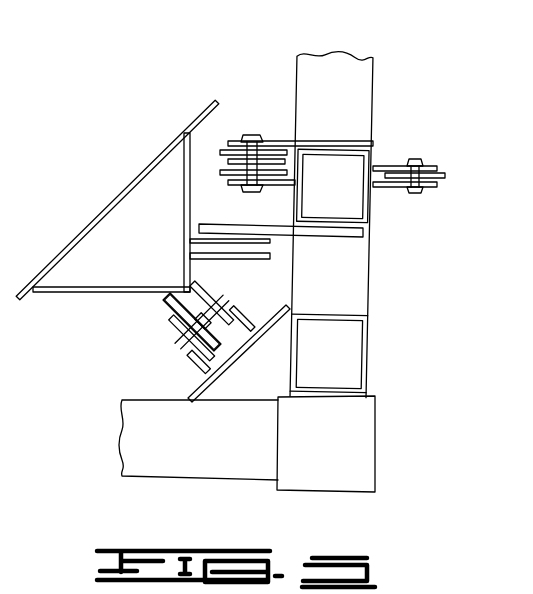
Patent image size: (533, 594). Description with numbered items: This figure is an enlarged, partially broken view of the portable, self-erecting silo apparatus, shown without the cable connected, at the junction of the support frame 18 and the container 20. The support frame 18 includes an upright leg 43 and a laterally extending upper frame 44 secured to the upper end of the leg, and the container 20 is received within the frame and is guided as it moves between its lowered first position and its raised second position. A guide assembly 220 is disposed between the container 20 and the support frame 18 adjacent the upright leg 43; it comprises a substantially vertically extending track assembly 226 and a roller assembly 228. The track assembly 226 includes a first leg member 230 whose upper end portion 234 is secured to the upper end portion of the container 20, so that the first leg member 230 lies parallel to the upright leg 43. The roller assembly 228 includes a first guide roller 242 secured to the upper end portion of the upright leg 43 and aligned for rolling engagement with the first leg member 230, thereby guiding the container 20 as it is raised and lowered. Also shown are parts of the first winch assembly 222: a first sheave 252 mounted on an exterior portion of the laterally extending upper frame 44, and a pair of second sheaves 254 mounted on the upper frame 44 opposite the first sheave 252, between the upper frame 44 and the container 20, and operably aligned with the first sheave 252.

The support frame 18 is at (376, 271).
The container 20 is at (125, 190).
The upright leg 43 is at (348, 431).
The laterally extending upper frame 44 is at (375, 98).
The guide assembly 220 is at (162, 318).
The first winch assembly 222 is at (235, 85).
The track assembly 226 is at (115, 300).
The roller assembly 228 is at (179, 338).
The first leg member 230 is at (72, 291).
The upper end portion 234 is at (190, 166).
The first guide roller 242 is at (215, 296).
The first sheave 252 is at (408, 159).
The second sheaves 254 is at (255, 135).